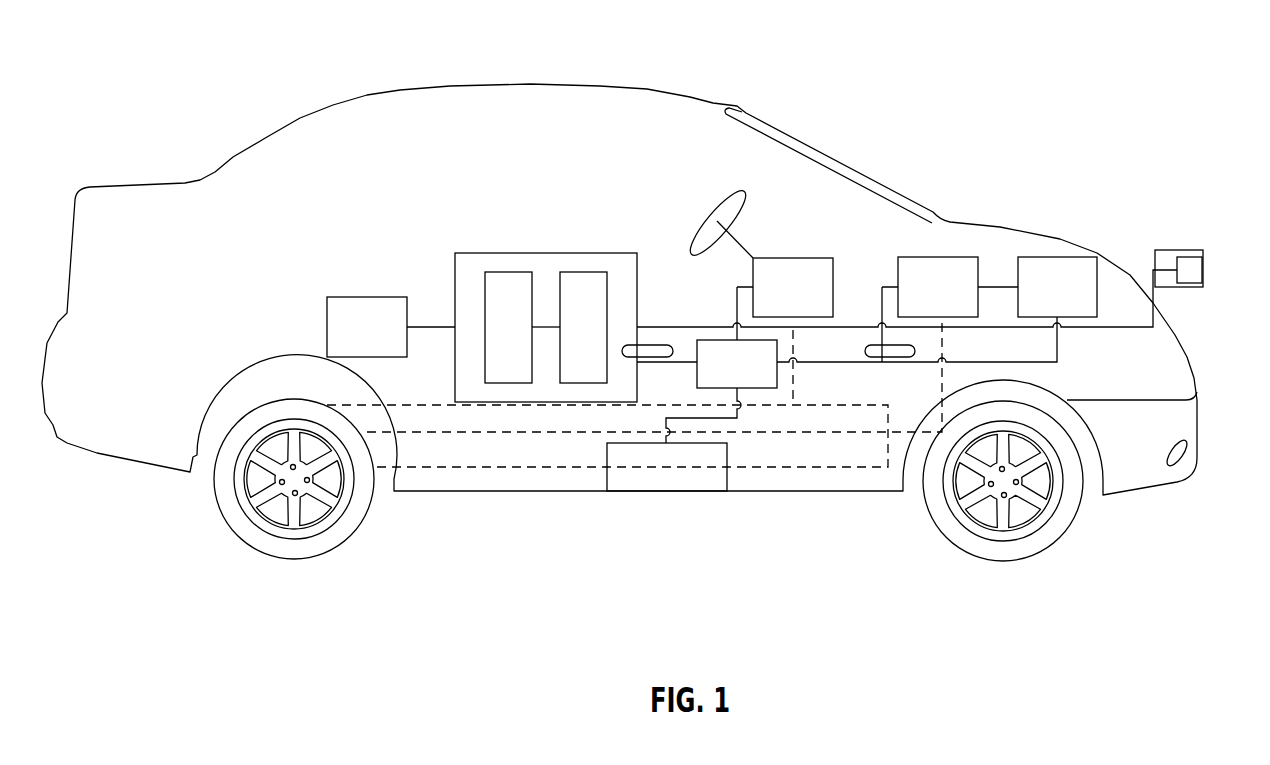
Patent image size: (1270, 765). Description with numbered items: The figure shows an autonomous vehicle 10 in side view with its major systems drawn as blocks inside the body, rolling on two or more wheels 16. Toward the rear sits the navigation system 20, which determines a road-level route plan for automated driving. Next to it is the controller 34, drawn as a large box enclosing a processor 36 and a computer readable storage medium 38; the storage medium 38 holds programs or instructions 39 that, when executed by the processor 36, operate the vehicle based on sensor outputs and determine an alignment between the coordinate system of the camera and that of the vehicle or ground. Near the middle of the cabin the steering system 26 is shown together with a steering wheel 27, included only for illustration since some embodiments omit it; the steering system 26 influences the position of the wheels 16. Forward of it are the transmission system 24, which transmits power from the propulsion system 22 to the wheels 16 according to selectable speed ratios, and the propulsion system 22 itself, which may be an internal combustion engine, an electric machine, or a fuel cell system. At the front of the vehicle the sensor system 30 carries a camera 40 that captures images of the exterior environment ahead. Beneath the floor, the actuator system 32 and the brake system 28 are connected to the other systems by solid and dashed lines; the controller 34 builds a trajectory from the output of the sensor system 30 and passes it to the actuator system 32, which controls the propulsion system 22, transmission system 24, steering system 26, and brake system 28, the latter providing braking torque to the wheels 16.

The vehicle 10 is at (1118, 63).
The wheels 16 is at (233, 533).
The navigation system 20 is at (388, 297).
The propulsion system 22 is at (1057, 257).
The transmission system 24 is at (952, 257).
The steering system 26 is at (793, 258).
The steering wheel 27 is at (730, 190).
The brake system 28 is at (657, 477).
The sensor system 30 is at (1186, 255).
The actuator system 32 is at (724, 379).
The controller 34 is at (470, 252).
The processor 36 is at (515, 270).
The computer readable storage medium 38 is at (585, 270).
The programs or instructions 39 is at (584, 384).
The camera 40 is at (1192, 288).